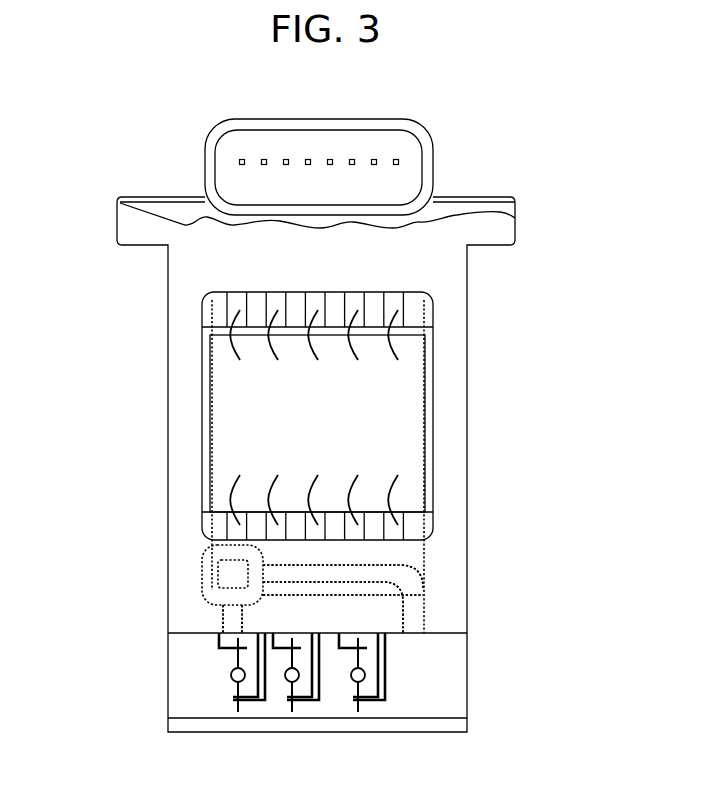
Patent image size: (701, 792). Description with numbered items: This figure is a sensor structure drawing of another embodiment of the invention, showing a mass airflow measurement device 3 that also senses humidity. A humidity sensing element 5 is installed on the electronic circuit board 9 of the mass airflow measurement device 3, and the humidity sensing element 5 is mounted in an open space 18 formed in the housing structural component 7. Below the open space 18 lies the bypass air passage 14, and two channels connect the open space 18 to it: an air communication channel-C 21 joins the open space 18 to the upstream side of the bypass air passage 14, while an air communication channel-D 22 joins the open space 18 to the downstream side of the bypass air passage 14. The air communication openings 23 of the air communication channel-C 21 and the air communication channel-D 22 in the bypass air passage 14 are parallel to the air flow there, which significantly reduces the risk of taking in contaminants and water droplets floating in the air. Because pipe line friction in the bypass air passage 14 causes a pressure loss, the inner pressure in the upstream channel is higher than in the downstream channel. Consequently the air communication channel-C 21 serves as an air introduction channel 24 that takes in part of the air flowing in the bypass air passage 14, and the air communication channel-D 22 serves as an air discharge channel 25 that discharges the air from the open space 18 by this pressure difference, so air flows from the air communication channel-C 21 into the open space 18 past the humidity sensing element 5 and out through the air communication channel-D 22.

The mass airflow measurement device 3 is at (433, 148).
The housing structural component 7 is at (467, 282).
The electronic circuit board 9 is at (357, 397).
The open space 18 is at (230, 554).
The humidity sensing element 5 is at (230, 575).
The air communication channel-C 21 is at (230, 618).
The air introduction channel 24 is at (170, 619).
The air communication channel-D 22 is at (415, 613).
The air discharge channel 25 is at (426, 599).
The air communication openings 23 is at (225, 647).
The bypass air passage 14 is at (452, 678).